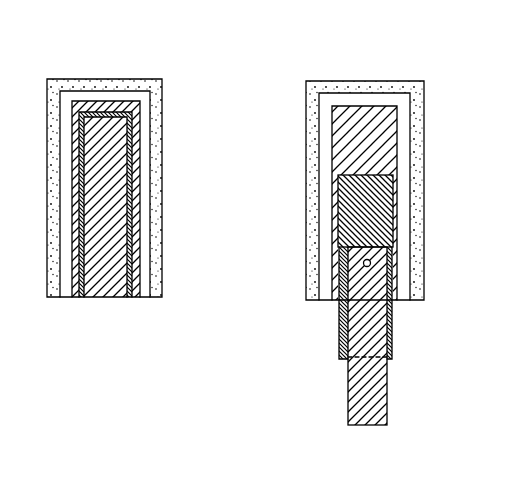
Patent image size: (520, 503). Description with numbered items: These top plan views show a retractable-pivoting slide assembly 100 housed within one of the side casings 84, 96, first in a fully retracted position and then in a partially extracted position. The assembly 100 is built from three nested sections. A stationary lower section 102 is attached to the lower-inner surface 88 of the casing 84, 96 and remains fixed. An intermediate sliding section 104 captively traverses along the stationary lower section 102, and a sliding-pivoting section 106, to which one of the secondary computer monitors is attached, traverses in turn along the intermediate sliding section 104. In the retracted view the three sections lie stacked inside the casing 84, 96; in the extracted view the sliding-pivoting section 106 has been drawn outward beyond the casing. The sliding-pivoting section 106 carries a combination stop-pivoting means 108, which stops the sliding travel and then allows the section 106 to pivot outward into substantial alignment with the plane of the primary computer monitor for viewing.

In FIG. 5, the retractable-pivoting slide assembly 100 is at (72, 70).
In FIG. 6, the retractable-pivoting slide assembly 100 is at (330, 76).
In FIG. 5, the lower-inner surface 88 is at (134, 100).
In FIG. 6, the lower-inner surface 88 is at (397, 100).
In FIG. 5, the stationary lower section 102 is at (135, 110).
In FIG. 6, the stationary lower section 102 is at (395, 120).
In FIG. 5, the intermediate sliding section 104 is at (133, 147).
In FIG. 6, the intermediate sliding section 104 is at (385, 187).
In FIG. 5, the sliding-pivoting section 106 is at (103, 180).
In FIG. 6, the sliding-pivoting section 106 is at (387, 273).
In FIG. 6, the combination stop-pivoting means 108 is at (378, 355).
In FIG. 5, the side casing 84 is at (154, 188).
In FIG. 6, the side casing 84 is at (413, 190).
In FIG. 5, the side casing 96 is at (164, 248).
In FIG. 6, the side casing 96 is at (423, 215).